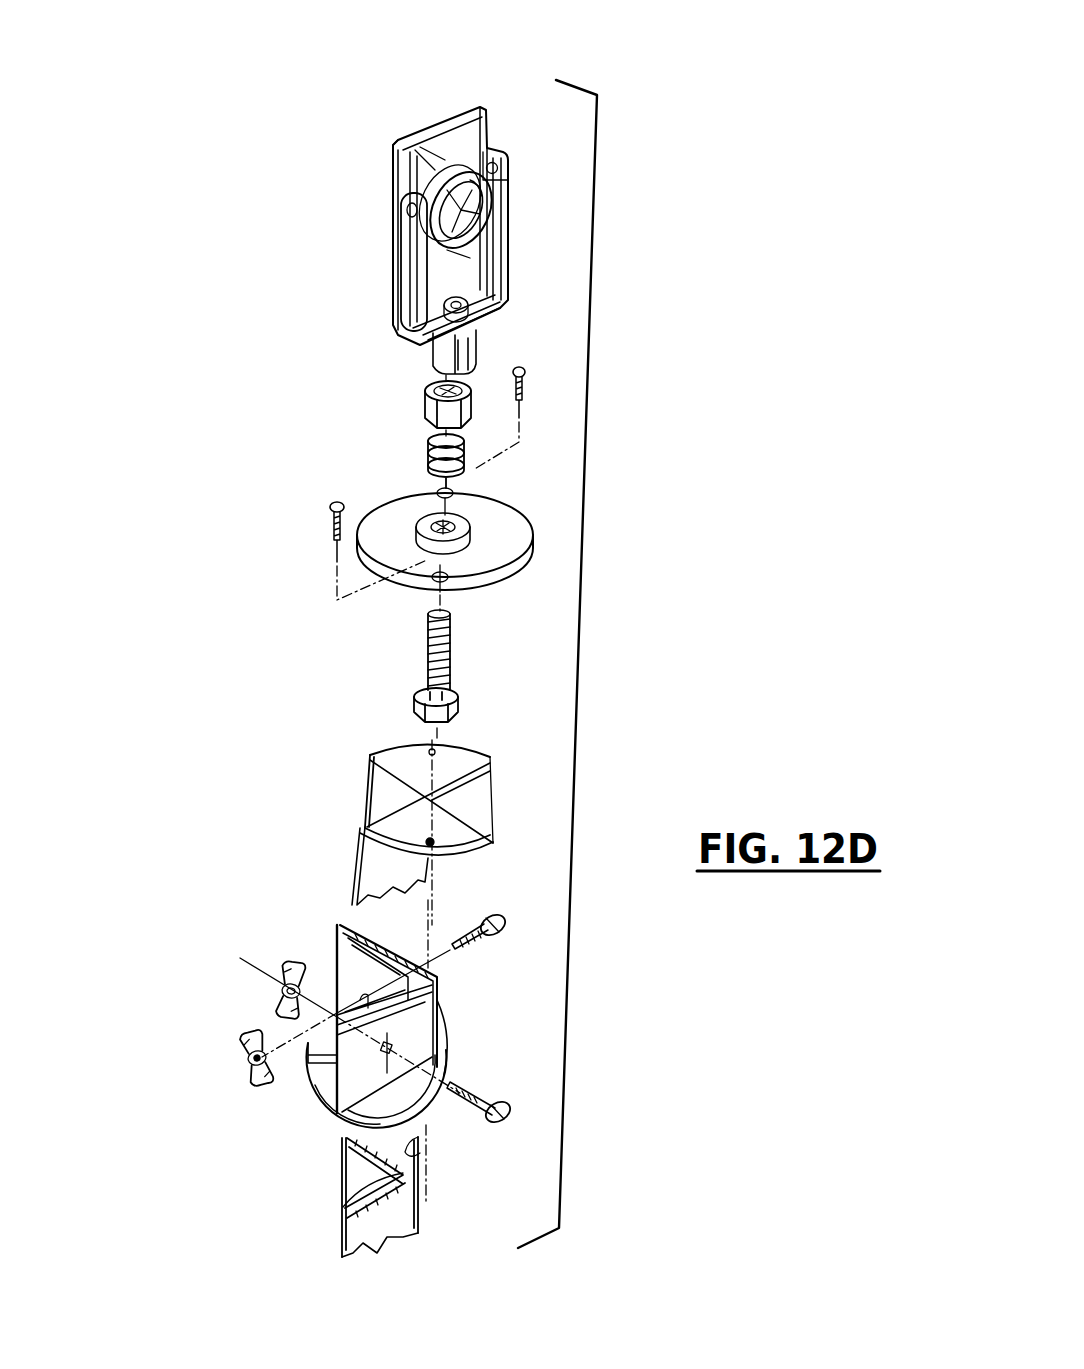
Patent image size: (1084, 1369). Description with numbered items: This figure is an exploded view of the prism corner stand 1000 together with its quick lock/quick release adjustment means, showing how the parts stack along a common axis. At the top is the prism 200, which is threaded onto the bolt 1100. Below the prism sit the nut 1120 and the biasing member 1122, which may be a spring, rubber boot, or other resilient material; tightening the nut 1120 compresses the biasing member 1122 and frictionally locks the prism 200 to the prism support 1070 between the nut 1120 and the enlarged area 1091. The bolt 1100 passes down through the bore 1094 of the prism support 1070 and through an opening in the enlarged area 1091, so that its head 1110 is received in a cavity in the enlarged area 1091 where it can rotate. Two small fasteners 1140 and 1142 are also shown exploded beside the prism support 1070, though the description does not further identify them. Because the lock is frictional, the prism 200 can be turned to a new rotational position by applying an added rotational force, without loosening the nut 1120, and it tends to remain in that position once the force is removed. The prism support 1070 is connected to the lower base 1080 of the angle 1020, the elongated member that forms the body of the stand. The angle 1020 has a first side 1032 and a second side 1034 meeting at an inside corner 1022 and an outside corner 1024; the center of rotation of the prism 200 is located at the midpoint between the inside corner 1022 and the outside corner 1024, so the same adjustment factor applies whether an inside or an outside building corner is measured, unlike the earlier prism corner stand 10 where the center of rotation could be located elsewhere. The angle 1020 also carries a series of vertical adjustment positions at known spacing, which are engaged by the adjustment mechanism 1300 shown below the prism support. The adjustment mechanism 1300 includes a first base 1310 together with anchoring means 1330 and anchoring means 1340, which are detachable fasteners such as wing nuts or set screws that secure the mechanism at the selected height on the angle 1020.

The prism corner stand 1000 is at (597, 115).
The prism 200 is at (430, 175).
The nut 1120 is at (425, 395).
The biasing member 1122 is at (418, 450).
The prism support 1070 is at (360, 515).
The bore 1094 is at (372, 530).
The enlarged area 1091 is at (473, 470).
The screw 1140 is at (333, 507).
The screw 1142 is at (519, 372).
The bolt 1100 is at (455, 645).
The head 1110 is at (463, 710).
The lower base 1080 is at (400, 753).
The angle 1020 is at (377, 793).
The prism corner stand 10 is at (503, 730).
The adjustment mechanism 1300 is at (440, 987).
The first base 1310 is at (310, 1078).
The anchoring means 1330 is at (493, 915).
The anchoring means 1340 is at (497, 1098).
The second side 1034 is at (420, 1160).
The outside corner 1024 is at (420, 1178).
The inside corner 1022 is at (343, 1197).
The first side 1032 is at (383, 1230).